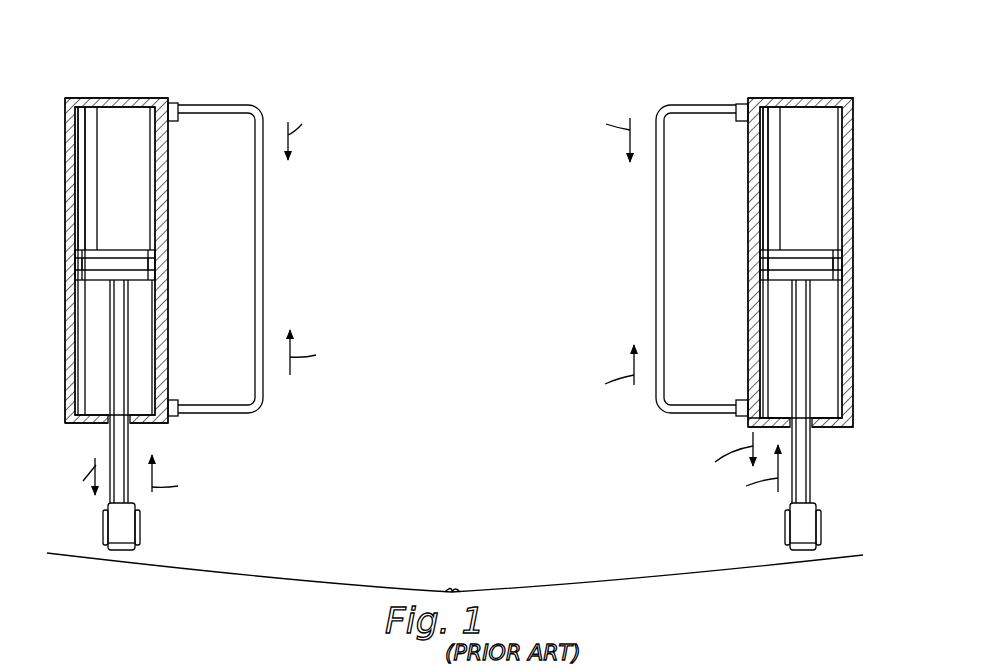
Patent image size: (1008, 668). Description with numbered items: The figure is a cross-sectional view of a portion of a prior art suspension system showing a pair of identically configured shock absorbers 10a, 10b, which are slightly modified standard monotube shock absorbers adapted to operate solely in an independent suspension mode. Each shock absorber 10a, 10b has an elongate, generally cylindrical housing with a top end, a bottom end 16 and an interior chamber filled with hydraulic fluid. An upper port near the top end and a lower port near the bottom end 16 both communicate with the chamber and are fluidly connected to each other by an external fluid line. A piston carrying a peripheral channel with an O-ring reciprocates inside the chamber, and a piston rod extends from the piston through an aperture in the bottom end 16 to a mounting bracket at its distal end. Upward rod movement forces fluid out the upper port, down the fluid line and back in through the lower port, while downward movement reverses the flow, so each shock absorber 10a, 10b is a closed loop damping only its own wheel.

The shock absorber 10a is at (205, 300).
The shock absorber 10b is at (719, 303).
The bottom end 16 is at (842, 432).